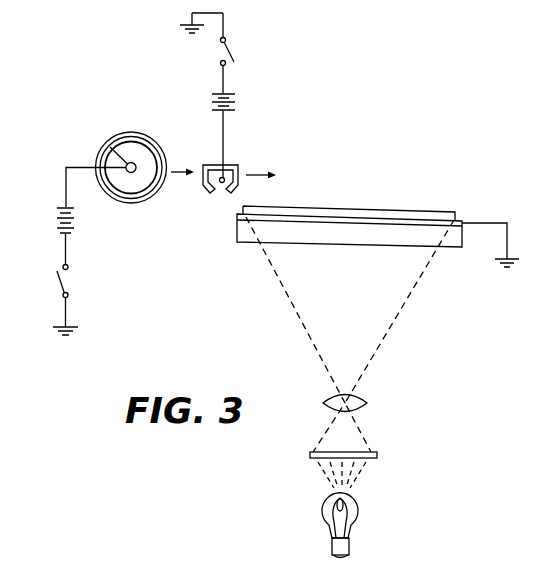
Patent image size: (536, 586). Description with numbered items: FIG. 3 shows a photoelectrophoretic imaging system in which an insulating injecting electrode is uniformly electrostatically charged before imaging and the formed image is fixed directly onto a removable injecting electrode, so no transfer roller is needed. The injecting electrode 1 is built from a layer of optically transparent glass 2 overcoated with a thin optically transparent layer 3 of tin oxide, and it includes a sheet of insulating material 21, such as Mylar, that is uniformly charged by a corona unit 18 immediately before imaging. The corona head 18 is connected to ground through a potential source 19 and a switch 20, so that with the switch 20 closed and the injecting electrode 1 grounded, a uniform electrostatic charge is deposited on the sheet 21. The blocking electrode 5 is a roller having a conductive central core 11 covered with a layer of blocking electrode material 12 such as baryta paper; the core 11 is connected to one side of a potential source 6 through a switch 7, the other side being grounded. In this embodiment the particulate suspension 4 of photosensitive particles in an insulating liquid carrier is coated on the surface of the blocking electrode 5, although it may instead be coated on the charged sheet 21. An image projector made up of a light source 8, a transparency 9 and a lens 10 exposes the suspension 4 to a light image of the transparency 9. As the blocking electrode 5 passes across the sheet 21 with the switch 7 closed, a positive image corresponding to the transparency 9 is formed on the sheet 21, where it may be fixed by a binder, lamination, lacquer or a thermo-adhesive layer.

The injecting electrode 1 is at (324, 225).
The optically transparent glass 2 is at (239, 243).
The optically transparent layer of tin oxide 3 is at (237, 216).
The liquid suspension of photosensitive particles 4 is at (134, 133).
The blocking electrode 5 is at (133, 154).
The potential source 6 is at (55, 219).
The switch 7 is at (57, 273).
The light source 8 is at (358, 508).
The transparency 9 is at (377, 456).
The lens 10 is at (366, 403).
The conductive central core 11 is at (110, 147).
The blocking electrode material 12 is at (120, 137).
The corona discharge unit 18 is at (233, 164).
The potential source 19 is at (238, 103).
The switch 20 is at (241, 34).
The sheet of insulating material 21 is at (441, 212).